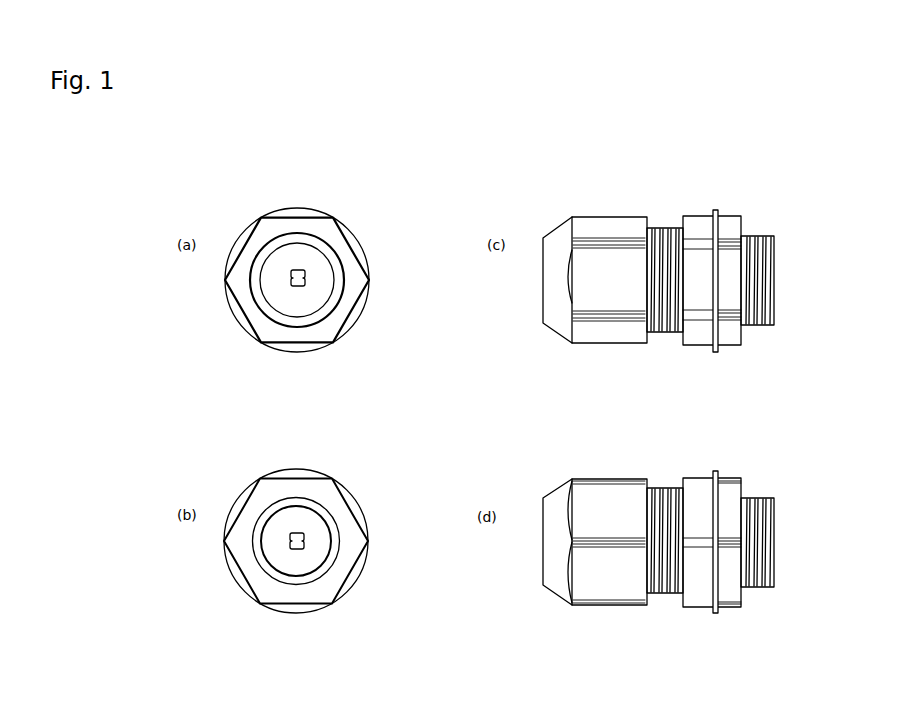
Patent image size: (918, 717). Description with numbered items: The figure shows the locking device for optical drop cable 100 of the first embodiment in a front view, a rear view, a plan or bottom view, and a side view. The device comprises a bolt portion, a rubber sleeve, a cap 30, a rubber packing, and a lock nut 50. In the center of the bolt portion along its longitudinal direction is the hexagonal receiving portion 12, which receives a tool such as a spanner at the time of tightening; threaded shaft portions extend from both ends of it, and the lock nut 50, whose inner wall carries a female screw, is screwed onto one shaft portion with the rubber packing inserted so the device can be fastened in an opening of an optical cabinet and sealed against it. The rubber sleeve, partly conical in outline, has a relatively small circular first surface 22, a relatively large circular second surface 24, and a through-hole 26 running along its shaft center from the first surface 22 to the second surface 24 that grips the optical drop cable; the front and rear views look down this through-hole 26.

The locking device for optical drop cable 100 is at (368, 189).
The receiving portion 12 is at (308, 213).
The first surface 22 is at (320, 528).
The second surface 24 is at (325, 268).
The through-hole 26 is at (297, 288).
The cap 30 is at (292, 483).
The lock nut 50 is at (268, 220).